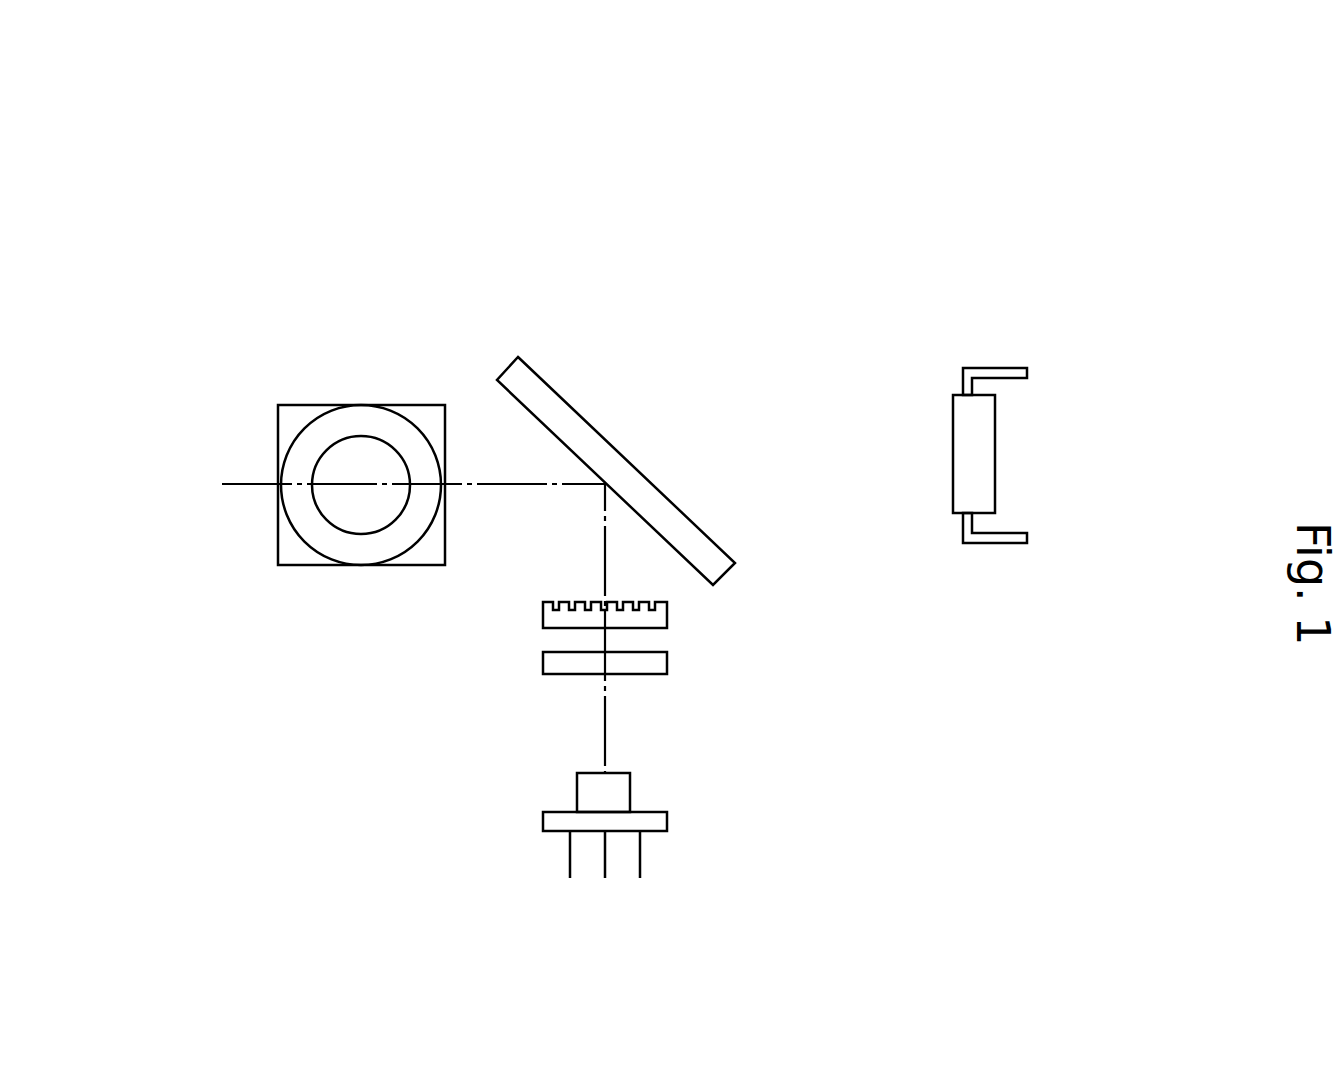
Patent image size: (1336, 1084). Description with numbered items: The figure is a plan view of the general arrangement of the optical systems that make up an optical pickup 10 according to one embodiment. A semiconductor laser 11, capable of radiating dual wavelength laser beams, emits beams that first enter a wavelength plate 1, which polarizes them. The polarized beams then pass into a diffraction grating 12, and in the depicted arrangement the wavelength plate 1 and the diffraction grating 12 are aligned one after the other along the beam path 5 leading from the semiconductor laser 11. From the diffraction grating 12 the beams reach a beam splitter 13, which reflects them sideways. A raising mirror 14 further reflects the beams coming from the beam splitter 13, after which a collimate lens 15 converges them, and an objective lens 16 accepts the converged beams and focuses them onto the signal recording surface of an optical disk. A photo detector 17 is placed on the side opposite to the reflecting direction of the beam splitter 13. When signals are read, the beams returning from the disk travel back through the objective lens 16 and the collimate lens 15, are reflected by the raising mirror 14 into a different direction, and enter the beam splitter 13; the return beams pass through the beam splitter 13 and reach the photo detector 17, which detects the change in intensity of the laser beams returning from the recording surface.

The wavelength plate 1 is at (667, 668).
The optical axis 5 is at (605, 703).
The optical pickup 10 is at (593, 168).
The semiconductor laser 11 is at (667, 822).
The diffraction grating 12 is at (667, 610).
The beam splitter 13 is at (507, 367).
The raising mirror 14 is at (298, 425).
The collimate lens 15 is at (297, 533).
The objective lens 16 is at (345, 505).
The photo detector 17 is at (988, 450).